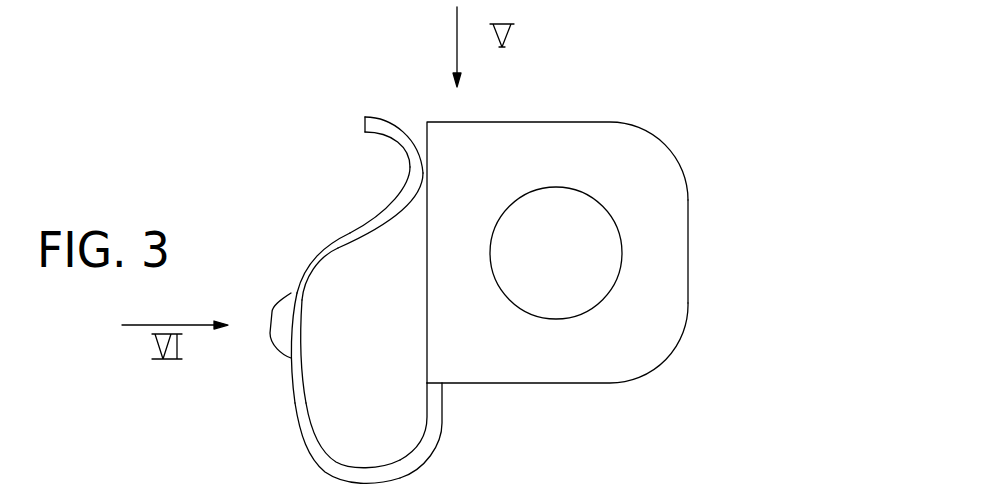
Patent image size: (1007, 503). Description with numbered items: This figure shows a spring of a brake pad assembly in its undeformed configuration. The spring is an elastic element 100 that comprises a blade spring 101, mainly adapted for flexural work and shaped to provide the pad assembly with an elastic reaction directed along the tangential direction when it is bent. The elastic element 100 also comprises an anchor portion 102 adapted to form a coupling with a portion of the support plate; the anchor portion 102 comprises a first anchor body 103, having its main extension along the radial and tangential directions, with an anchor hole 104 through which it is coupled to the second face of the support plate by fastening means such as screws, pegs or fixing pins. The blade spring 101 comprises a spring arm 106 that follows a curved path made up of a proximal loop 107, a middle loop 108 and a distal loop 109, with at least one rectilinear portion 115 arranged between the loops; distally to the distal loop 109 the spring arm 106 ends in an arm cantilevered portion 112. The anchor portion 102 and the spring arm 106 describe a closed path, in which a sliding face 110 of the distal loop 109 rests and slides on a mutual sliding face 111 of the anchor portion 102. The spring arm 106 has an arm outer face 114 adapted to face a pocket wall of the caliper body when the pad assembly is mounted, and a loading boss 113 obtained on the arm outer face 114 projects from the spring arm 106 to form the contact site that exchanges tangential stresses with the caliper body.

The elastic element 100 is at (528, 253).
The blade spring 101 is at (496, 253).
The anchor portion 102 is at (630, 156).
The first anchor body 103 is at (665, 298).
The anchor hole 104 is at (568, 270).
The spring arm 106 is at (370, 253).
The proximal loop 107 is at (417, 448).
The middle loop 108 is at (323, 255).
The distal loop 109 is at (407, 185).
The sliding face 110 is at (423, 173).
The mutual sliding face 111 is at (427, 175).
The arm cantilevered portion 112 is at (372, 116).
The loading boss 113 is at (272, 313).
The arm outer face 114 is at (303, 442).
The rectilinear portion 115 is at (293, 382).